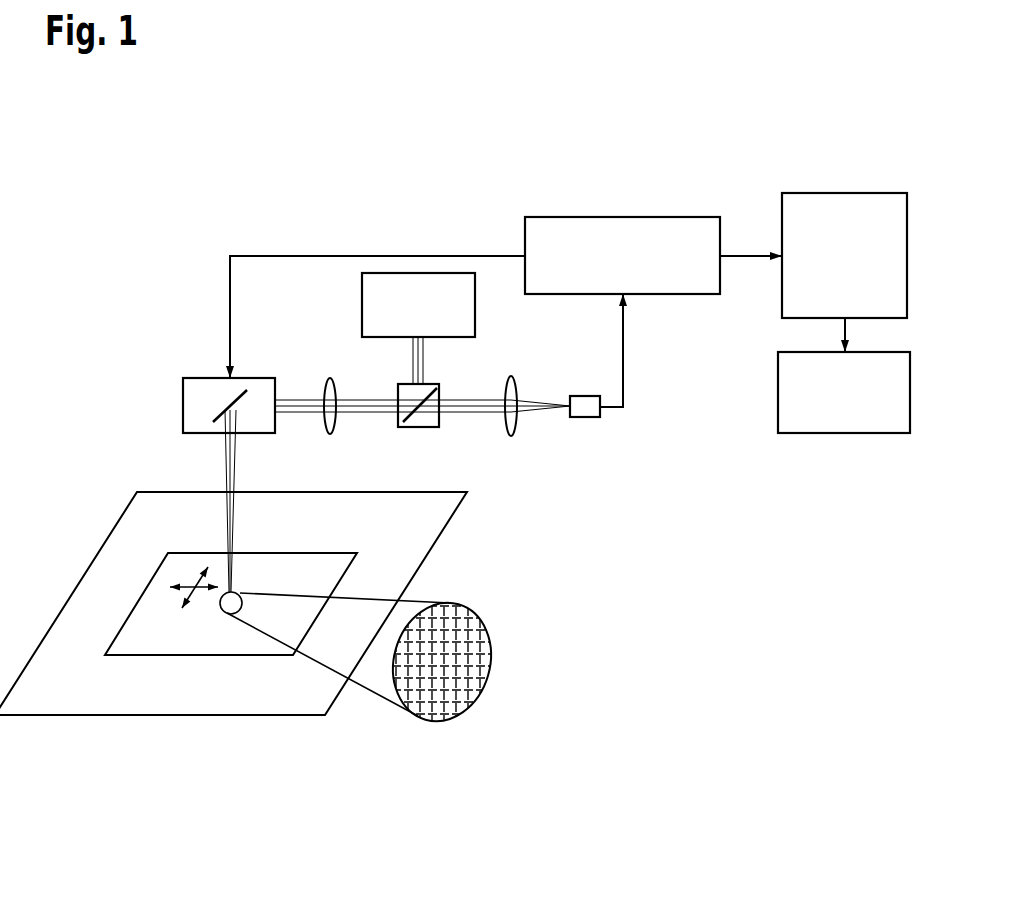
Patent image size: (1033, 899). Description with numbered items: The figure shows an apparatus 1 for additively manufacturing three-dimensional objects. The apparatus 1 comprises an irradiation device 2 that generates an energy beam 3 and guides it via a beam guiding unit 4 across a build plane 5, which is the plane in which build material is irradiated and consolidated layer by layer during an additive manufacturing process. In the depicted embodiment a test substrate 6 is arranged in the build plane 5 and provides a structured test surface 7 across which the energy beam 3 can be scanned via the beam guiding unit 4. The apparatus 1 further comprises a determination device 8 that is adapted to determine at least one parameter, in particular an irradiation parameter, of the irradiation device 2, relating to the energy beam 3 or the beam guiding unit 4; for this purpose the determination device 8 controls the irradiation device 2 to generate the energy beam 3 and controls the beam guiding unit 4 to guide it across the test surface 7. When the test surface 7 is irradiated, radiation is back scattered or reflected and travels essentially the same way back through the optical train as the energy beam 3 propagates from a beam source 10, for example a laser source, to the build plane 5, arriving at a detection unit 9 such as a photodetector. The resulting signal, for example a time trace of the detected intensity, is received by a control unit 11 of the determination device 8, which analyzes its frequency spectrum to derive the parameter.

The apparatus 1 is at (160, 205).
The irradiation device 2 is at (338, 357).
The energy beam 3 is at (225, 465).
The beam guiding unit 4 is at (183, 403).
The build plane 5 is at (112, 525).
The test substrate 6 is at (170, 670).
The test surface 7 is at (350, 562).
The determination device 8 is at (729, 395).
The detection unit 9 is at (585, 418).
The beam source 10 is at (418, 273).
The control unit 11 is at (623, 217).